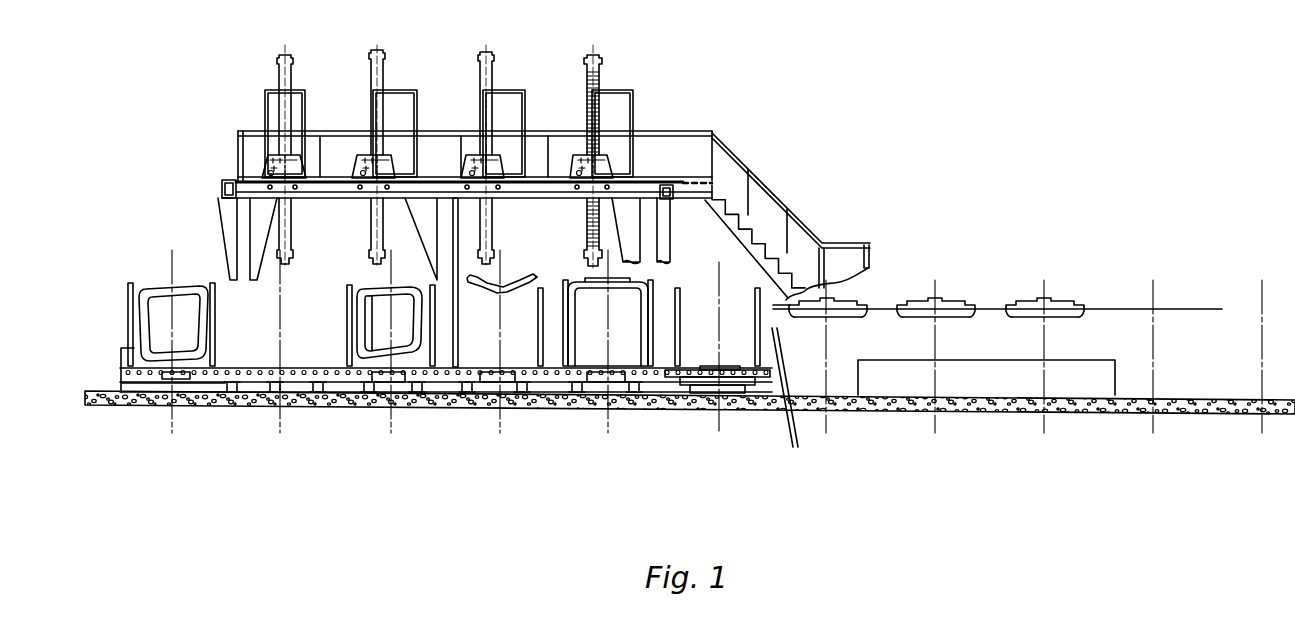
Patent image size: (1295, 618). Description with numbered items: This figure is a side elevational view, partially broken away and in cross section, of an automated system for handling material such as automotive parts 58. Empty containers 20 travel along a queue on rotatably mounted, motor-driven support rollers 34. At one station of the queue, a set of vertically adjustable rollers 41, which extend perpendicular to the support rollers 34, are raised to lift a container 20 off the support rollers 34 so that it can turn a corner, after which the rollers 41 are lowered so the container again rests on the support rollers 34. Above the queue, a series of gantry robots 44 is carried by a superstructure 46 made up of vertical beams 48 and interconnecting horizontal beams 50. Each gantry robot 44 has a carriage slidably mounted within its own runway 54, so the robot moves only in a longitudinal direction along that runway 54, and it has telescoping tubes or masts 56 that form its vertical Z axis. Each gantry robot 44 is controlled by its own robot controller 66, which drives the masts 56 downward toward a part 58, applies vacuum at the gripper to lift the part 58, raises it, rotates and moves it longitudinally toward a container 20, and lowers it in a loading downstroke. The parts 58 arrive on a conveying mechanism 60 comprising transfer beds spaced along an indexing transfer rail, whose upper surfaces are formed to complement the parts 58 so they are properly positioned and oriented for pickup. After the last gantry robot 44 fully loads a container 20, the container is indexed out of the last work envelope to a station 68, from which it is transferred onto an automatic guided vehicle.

The container 20 is at (128, 310).
The support rollers 34 is at (315, 372).
The vertically adjustable rollers 41 is at (727, 404).
The gantry robot 44 is at (258, 156).
The superstructure 46 is at (207, 190).
The vertical beams 48 is at (593, 242).
The horizontal beams 50 is at (226, 181).
The runway 54 is at (292, 155).
The telescoping tubes or masts 56 is at (294, 82).
The automotive parts 58 is at (190, 287).
The conveying mechanism 60 is at (1137, 337).
The robot controller 66 is at (306, 100).
The station 68 is at (173, 322).